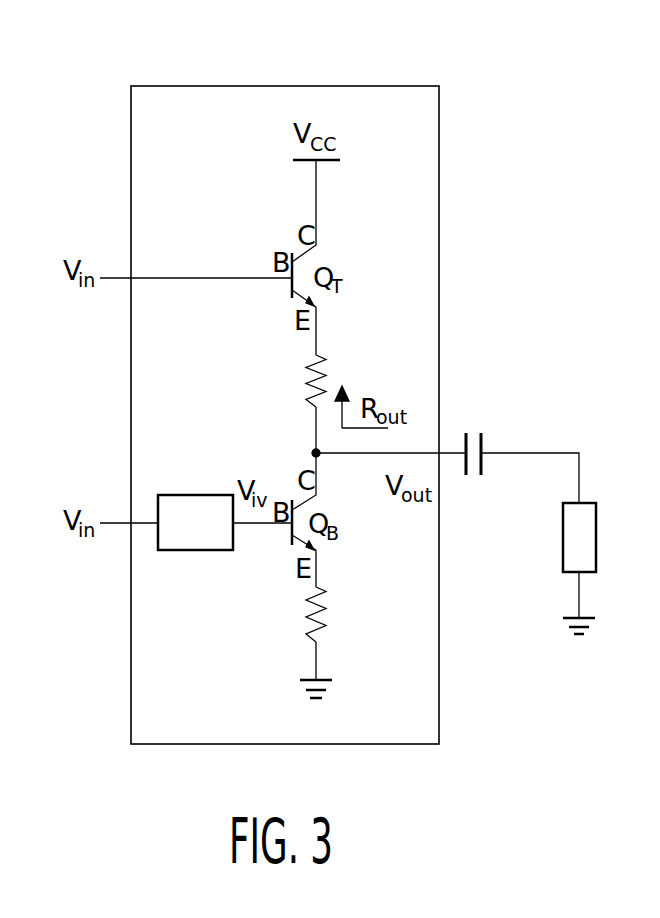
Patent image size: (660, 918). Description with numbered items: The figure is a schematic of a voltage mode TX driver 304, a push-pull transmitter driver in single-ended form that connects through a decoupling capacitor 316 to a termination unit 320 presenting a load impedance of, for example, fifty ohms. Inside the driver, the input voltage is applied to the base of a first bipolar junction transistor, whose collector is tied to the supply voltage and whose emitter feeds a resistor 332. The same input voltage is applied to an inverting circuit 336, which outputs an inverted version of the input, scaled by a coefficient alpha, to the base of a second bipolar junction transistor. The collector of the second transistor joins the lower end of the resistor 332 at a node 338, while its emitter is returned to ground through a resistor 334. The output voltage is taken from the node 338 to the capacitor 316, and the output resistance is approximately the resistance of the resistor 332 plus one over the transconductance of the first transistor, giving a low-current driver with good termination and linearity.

The voltage mode TX driver 304 is at (421, 86).
The resistor 332 is at (322, 378).
The node 338 is at (312, 453).
The inverting circuit 336 is at (212, 550).
The resistor 334 is at (310, 620).
The decoupling capacitor 316 is at (483, 440).
The termination unit 320 is at (562, 540).